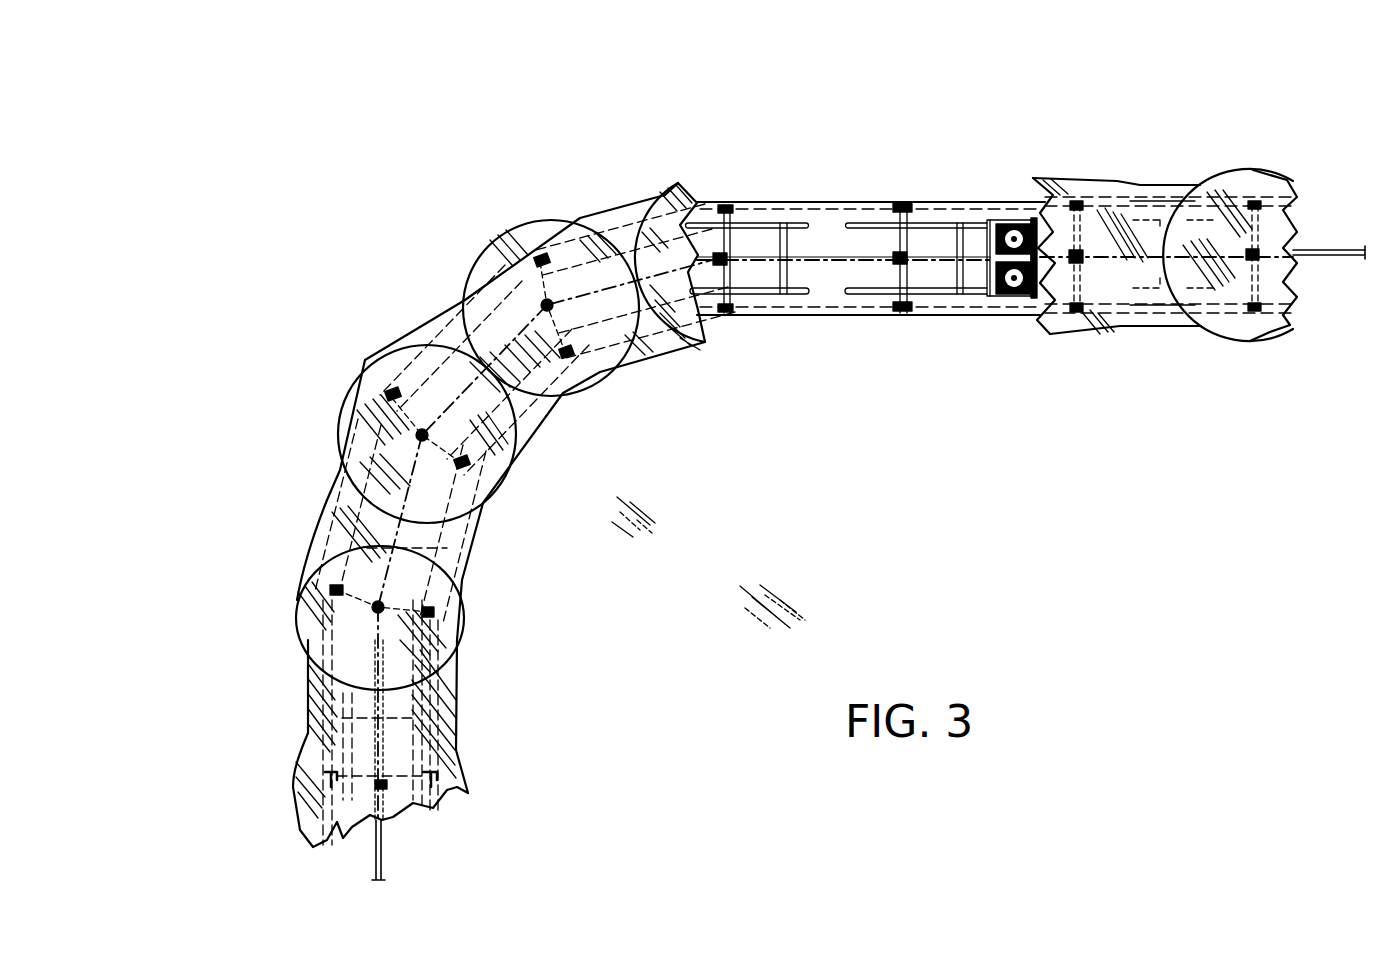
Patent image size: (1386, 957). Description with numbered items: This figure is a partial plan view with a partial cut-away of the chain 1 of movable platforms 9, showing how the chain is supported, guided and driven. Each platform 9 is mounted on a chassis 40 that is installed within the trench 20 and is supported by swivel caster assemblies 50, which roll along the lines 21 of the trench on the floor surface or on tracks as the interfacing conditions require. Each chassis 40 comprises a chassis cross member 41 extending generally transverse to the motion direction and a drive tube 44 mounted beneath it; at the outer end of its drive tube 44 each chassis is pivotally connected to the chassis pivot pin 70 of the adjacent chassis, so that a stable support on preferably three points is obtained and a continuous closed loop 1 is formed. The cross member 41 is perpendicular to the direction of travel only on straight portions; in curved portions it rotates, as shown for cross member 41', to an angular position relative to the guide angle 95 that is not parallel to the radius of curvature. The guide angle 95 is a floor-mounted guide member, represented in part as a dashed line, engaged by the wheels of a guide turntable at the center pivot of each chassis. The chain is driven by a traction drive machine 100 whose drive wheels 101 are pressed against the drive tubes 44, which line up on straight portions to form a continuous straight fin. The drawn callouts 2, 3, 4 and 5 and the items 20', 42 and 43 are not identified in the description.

The chain of movable platforms 1 is at (492, 602).
The broken-away portion 2 is at (743, 602).
The view direction of FIG. 3 is at (1280, 21).
The section line 4- 4 is at (1038, 21).
The section line 5- 5 is at (942, 21).
The movable platform 9 is at (349, 365).
The trench 20 is at (868, 200).
The link segment shell 20' is at (966, 253).
The lines of the trench 21 is at (607, 227).
The chassis 40 is at (770, 334).
The chassis cross member 41 is at (719, 203).
The cross member in rotated position 41' is at (557, 248).
The cross member 42 is at (780, 208).
The upper rail 43 is at (827, 212).
The drive tube 44 is at (854, 333).
The swivel caster assembly 50 is at (727, 334).
The chassis pivot pin 70 is at (877, 208).
The guide angle 95 is at (483, 255).
The traction drive machine 100 is at (1011, 320).
The drive wheels 101 is at (1024, 318).